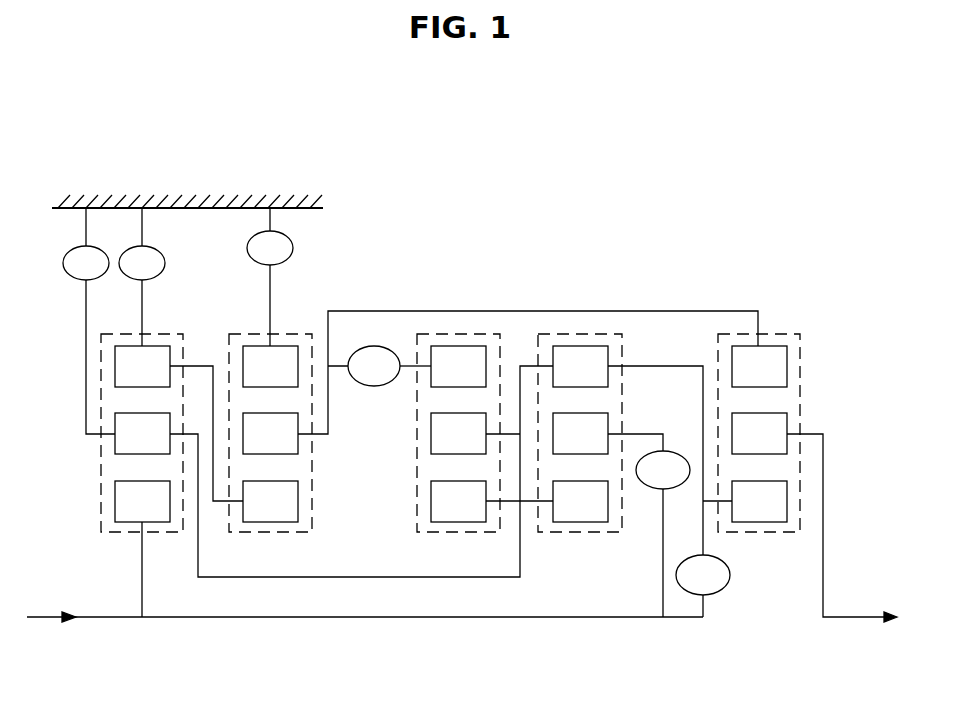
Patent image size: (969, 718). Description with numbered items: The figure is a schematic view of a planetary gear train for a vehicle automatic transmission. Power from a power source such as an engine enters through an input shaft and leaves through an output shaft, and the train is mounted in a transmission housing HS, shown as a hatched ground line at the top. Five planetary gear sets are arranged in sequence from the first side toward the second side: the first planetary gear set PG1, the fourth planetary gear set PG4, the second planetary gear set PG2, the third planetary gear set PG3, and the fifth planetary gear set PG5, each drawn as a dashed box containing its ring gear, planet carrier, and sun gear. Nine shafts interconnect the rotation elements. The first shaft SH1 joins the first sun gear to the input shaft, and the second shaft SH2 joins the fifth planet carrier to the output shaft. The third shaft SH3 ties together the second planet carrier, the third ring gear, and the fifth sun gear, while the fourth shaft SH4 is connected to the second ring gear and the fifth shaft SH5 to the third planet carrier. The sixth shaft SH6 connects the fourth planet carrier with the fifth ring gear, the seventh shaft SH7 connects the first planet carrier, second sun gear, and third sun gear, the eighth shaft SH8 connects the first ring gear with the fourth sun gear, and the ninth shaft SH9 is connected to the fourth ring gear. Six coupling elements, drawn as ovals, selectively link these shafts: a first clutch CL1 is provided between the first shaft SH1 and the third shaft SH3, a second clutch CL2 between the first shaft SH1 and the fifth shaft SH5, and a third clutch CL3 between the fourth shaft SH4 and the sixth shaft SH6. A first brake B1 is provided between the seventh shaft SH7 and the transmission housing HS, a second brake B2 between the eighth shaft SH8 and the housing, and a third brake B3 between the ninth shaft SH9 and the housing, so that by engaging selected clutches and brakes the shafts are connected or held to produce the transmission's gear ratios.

The transmission housing HS is at (228, 200).
The first brake B1 is at (86, 244).
The second brake B2 is at (142, 244).
The third brake B3 is at (270, 236).
The first clutch CL1 is at (703, 586).
The second clutch CL2 is at (663, 534).
The third clutch CL3 is at (374, 366).
The first shaft SH1 is at (115, 620).
The second shaft SH2 is at (823, 481).
The third shaft SH3 is at (528, 362).
The fourth shaft SH4 is at (410, 362).
The fifth shaft SH5 is at (650, 433).
The sixth shaft SH6 is at (633, 311).
The seventh shaft SH7 is at (86, 376).
The eighth shaft SH8 is at (142, 300).
The ninth shaft SH9 is at (270, 290).
The first planetary gear set PG1 is at (122, 533).
The second planetary gear set PG2 is at (458, 533).
The third planetary gear set PG3 is at (580, 533).
The fourth planetary gear set PG4 is at (270, 533).
The fifth planetary gear set PG5 is at (777, 334).